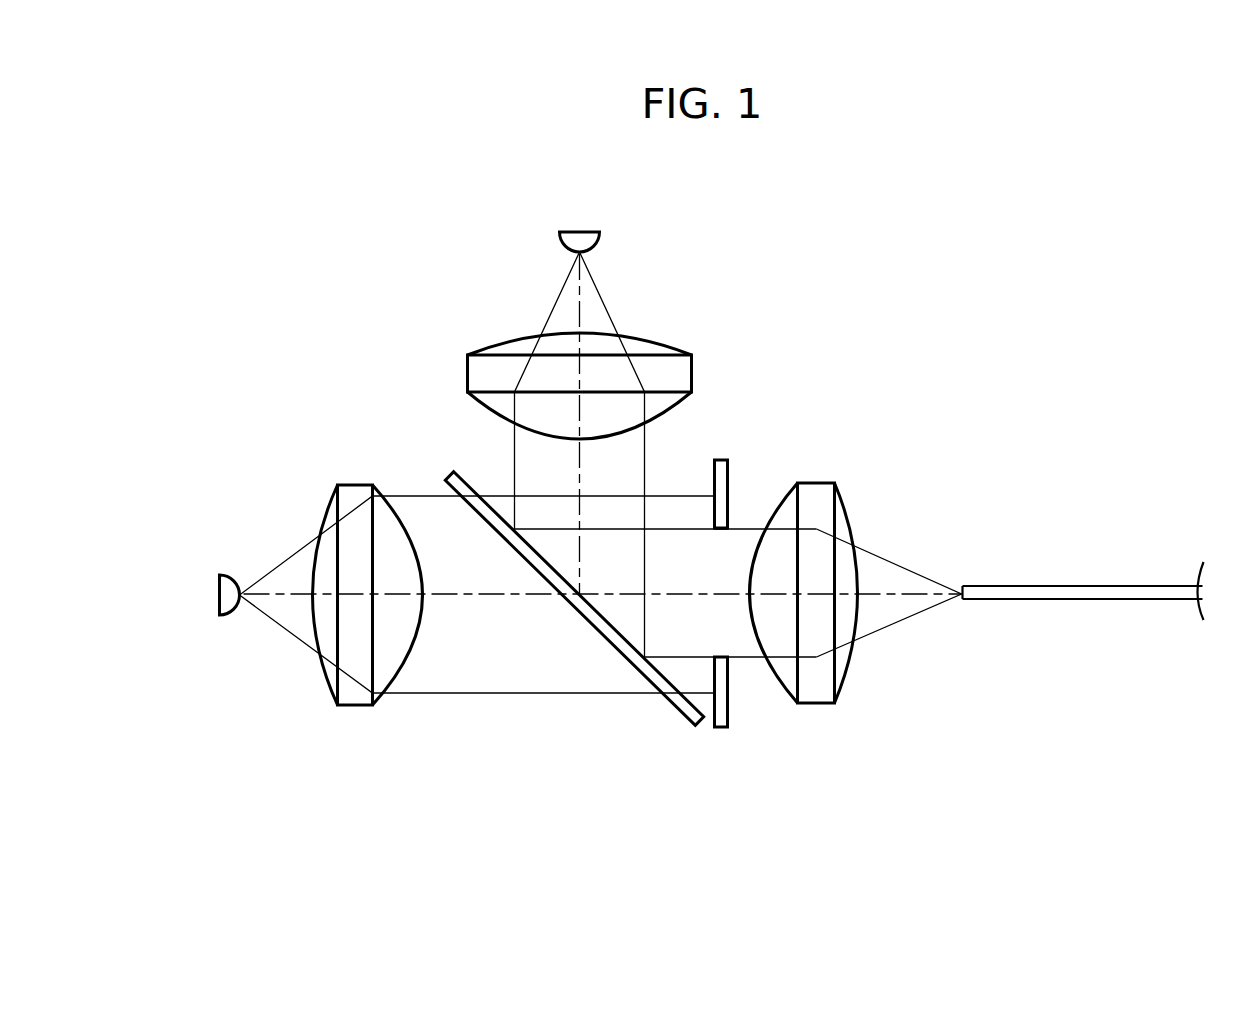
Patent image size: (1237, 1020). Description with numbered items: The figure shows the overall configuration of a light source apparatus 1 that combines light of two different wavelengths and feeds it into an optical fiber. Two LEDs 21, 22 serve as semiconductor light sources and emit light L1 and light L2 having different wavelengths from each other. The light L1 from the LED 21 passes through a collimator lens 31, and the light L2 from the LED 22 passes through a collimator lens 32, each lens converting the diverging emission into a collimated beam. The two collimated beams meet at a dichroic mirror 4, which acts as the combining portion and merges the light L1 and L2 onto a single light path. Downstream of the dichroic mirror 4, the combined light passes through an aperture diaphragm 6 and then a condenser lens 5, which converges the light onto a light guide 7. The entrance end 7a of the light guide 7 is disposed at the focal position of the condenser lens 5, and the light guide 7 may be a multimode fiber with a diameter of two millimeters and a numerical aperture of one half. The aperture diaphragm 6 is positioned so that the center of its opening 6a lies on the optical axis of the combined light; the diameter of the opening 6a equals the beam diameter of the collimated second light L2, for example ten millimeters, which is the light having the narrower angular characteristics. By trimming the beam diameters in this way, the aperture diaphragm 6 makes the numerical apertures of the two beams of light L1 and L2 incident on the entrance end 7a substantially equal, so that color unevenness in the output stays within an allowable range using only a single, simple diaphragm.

The light source apparatus 1 is at (838, 303).
The LED 21 is at (232, 578).
The LED 22 is at (600, 241).
The collimator lens 31 is at (352, 485).
The collimator lens 32 is at (466, 373).
The dichroic mirror 4 is at (623, 658).
The condenser lens 5 is at (815, 705).
The aperture diaphragm 6 is at (729, 477).
The opening 6a is at (722, 544).
The light guide 7 is at (1060, 600).
The entrance end 7a is at (963, 585).
The light L1 is at (290, 631).
The light L2 is at (604, 300).